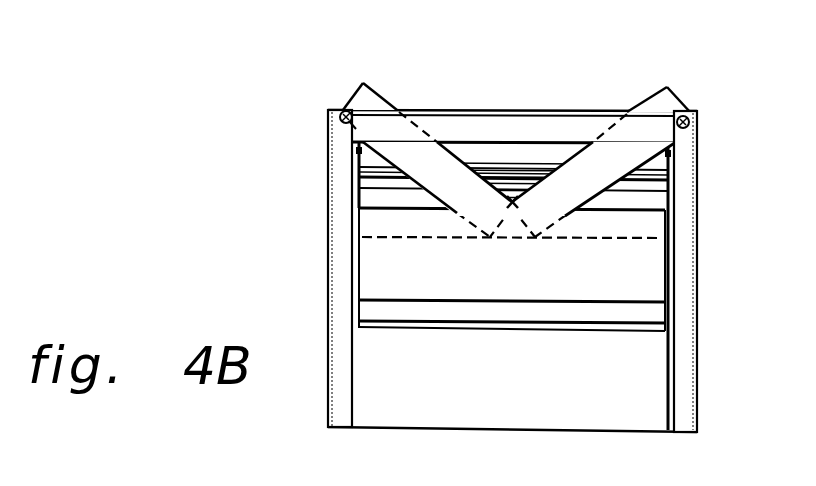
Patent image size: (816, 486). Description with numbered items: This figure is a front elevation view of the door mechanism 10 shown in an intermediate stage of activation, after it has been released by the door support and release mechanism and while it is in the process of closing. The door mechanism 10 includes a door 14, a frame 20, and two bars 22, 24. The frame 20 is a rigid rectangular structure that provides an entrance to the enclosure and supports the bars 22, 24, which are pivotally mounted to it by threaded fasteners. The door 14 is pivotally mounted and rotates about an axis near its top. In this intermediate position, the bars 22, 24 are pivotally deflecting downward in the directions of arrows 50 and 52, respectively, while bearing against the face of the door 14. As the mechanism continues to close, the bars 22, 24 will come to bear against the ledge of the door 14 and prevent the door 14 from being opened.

The door mechanism 10 is at (138, 149).
The door 14 is at (524, 289).
The frame 20 is at (328, 186).
The bar 22 is at (344, 108).
The bar 24 is at (688, 114).
The arrow 50 is at (460, 104).
The arrow 52 is at (570, 104).